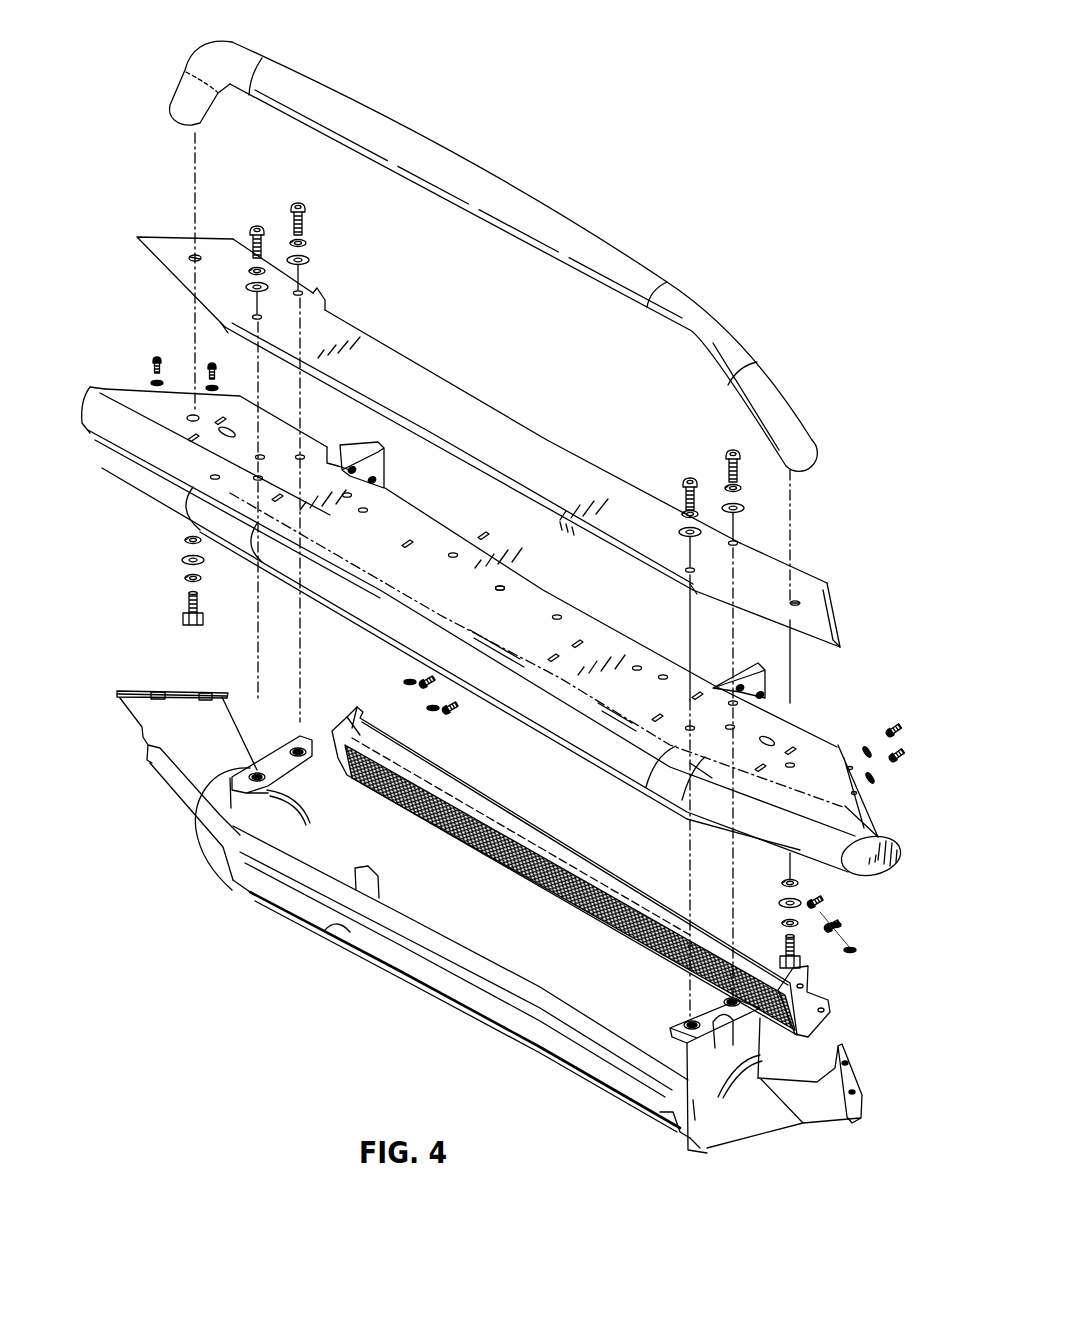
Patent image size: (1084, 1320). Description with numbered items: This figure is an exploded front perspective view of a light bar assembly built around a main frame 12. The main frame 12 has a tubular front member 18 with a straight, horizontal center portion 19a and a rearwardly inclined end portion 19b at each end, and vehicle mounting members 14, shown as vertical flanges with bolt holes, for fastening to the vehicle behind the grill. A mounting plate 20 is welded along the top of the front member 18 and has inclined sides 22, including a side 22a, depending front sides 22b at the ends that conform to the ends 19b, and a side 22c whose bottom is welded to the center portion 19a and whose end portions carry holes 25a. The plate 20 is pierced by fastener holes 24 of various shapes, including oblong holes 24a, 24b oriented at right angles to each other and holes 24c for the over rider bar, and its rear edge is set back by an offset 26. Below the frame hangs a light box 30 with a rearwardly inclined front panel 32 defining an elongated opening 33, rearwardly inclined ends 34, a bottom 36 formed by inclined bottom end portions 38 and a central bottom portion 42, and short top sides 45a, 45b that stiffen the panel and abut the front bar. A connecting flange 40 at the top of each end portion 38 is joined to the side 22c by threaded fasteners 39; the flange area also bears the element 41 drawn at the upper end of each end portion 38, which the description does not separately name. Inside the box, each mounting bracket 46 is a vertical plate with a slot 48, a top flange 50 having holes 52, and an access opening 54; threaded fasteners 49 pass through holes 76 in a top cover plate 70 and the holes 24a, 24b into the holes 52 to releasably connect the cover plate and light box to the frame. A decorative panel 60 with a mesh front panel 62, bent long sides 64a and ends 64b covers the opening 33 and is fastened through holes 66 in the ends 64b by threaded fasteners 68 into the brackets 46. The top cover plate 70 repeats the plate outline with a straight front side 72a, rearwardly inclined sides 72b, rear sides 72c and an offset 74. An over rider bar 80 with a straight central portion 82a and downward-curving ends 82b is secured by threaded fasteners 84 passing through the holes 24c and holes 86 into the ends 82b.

The main frame 12 is at (883, 816).
The vehicle mounting members 14 is at (376, 452).
The tubular front member 18 is at (802, 888).
The center portion of front member 19a is at (355, 618).
The rearwardly inclined end portion 19b is at (160, 490).
The mounting plate 20 is at (824, 724).
The inclined side 22 is at (590, 720).
The side of mounting plate 22a is at (540, 683).
The depending front side at plate end 22b is at (132, 415).
The front/rear side of mounting plate 22c is at (868, 812).
The fastener holes 24 is at (260, 482).
The oblong hole 24a is at (215, 479).
The oblong hole 24b is at (303, 455).
The over rider bar hole 24c is at (190, 421).
The rear side holes 25a is at (851, 764).
The offset 26 is at (331, 465).
The light box 30 is at (870, 1118).
The front panel 32 is at (690, 1140).
The opening 33 is at (325, 928).
The rearwardly inclined ends 34 is at (182, 802).
The bottom 36 is at (398, 881).
The inclined bottom end portion 38 is at (170, 730).
The threaded fasteners 39 is at (153, 362).
The connecting flange 40 is at (178, 691).
The mounting flange 41 is at (136, 708).
The central bottom portion 42 is at (358, 867).
The central top side 45a is at (290, 867).
The end top side 45b is at (177, 780).
The mounting bracket 46 is at (297, 867).
The slot 48 is at (277, 798).
The threaded fasteners 49 is at (307, 211).
The top flange 50 is at (292, 747).
The flange holes 52 is at (228, 768).
The access opening 54 is at (723, 1035).
The decorative panel 60 is at (540, 895).
The front panel of decorative panel 62 is at (580, 907).
The long sides 64a is at (528, 832).
The ends 64b is at (358, 711).
The holes 66 is at (810, 986).
The threaded fasteners 68 is at (445, 722).
The top cover plate 70 is at (458, 392).
The straight front side 72a is at (470, 464).
The rearwardly inclined sides 72b is at (140, 242).
The rear side 72c is at (178, 236).
The offset 74 is at (326, 301).
The holes 76 is at (303, 291).
The over rider bar 80 is at (622, 242).
The central portion of over rider bar 82a is at (571, 230).
The over rider bar ends 82b is at (785, 400).
The threaded fasteners 84 is at (184, 605).
The holes 86 is at (201, 253).